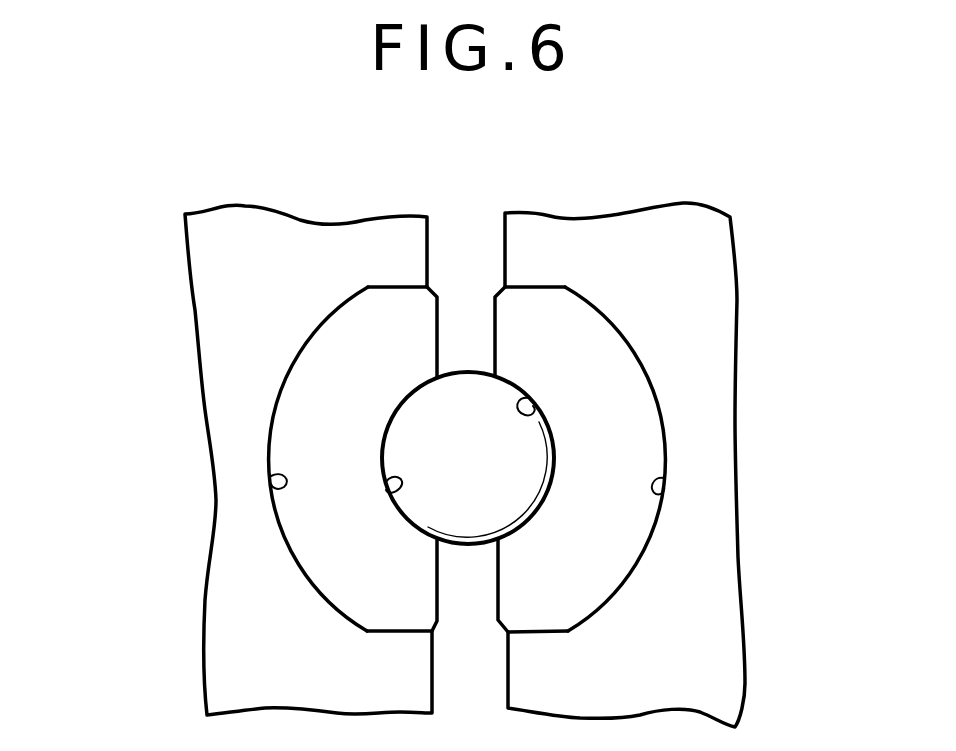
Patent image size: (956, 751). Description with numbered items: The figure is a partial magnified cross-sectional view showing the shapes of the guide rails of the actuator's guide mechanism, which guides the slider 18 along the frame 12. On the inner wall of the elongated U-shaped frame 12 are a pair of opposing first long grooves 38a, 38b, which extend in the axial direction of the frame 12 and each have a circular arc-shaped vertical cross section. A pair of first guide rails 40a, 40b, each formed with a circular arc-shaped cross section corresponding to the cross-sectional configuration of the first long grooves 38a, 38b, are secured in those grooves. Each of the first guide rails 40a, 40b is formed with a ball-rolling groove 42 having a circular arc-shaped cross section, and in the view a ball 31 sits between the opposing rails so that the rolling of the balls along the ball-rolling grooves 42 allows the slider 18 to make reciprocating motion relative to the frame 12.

The frame 12 is at (220, 305).
The slider 18 is at (715, 307).
The balls 31 is at (462, 397).
The first long groove 38a is at (273, 485).
The first long groove 38b is at (657, 485).
The first guide rail 40a is at (305, 382).
The first guide rail 40b is at (610, 550).
The ball-rolling groove 42 is at (395, 488).